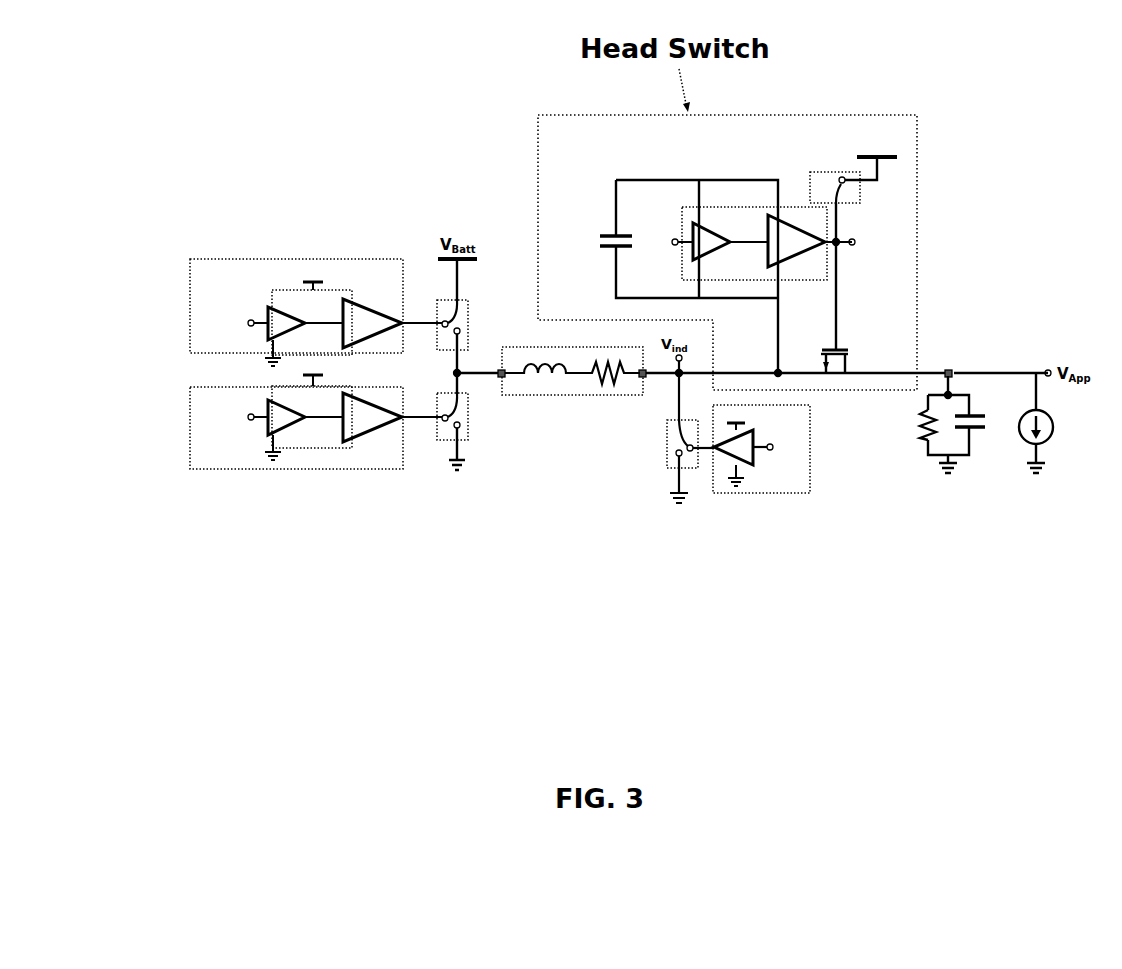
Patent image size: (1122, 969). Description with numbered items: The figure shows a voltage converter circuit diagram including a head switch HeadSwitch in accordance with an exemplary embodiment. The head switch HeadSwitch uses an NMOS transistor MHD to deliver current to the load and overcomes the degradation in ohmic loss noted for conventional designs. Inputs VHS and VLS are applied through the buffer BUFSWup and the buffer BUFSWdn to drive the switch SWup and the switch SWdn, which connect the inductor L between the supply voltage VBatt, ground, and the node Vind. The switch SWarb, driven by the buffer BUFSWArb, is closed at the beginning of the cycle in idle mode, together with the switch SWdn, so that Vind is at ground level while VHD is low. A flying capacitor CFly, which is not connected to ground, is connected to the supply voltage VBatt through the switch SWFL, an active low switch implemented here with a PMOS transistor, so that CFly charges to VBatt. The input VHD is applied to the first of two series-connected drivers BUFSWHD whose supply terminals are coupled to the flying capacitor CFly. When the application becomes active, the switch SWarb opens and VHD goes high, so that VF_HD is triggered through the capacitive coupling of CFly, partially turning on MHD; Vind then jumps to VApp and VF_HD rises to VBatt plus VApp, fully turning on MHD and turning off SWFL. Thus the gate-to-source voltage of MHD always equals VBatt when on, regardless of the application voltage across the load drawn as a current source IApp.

The inductor L is at (572, 386).
The switch SWup is at (476, 325).
The switch SWdn is at (478, 416).
The switch SWarb is at (663, 461).
The switch SWFL is at (846, 167).
The flying capacitor CFly is at (631, 252).
The NMOS transistor MHD is at (834, 369).
The application current source IApp is at (1060, 423).
The buffer for switch SWup BUFSWup is at (182, 343).
The buffer for switch SWdn BUFSWdn is at (182, 438).
The buffer for switch SWarb BUFSWArb is at (751, 506).
The drivers for the head switch BUFSWHD is at (740, 198).
The head switch HeadSwitch is at (727, 252).